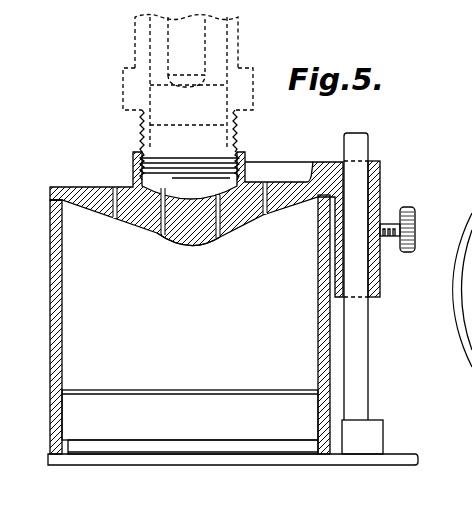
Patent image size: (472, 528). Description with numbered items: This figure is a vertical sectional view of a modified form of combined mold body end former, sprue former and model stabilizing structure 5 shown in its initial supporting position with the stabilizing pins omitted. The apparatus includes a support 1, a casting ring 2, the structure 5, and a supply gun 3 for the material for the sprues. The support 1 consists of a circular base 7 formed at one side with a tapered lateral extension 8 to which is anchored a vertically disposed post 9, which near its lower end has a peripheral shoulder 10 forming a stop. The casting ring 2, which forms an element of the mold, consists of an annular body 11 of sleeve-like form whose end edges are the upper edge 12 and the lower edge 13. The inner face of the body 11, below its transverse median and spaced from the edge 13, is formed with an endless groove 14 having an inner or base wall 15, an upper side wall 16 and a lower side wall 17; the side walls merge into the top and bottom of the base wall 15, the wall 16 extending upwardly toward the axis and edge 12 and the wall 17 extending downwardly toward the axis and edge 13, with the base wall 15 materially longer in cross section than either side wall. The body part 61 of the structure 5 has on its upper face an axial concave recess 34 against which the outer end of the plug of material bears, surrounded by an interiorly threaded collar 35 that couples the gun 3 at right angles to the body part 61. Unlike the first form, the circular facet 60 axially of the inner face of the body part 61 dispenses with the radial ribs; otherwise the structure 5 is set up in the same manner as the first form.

The support 1 is at (372, 352).
The casting ring 2 is at (337, 333).
The supply gun 3 is at (243, 40).
The combined mold body end former, sprue former and model stabilizing structure 5 is at (277, 180).
The circular base 7 is at (251, 466).
The tapered lateral extension 8 is at (380, 466).
The post 9 is at (360, 384).
The peripheral shoulder 10 is at (365, 418).
The annular body 11 is at (55, 303).
The end edge 12 is at (49, 204).
The end edge 13 is at (63, 462).
The endless groove 14 is at (65, 420).
The inner or base wall 15 is at (64, 408).
The upper side wall 16 is at (155, 390).
The lower side wall 17 is at (153, 445).
The concave recess 34 is at (219, 238).
The interiorly threaded collar 35 is at (208, 146).
The circular facet 60 is at (197, 247).
The body part 61 is at (88, 187).